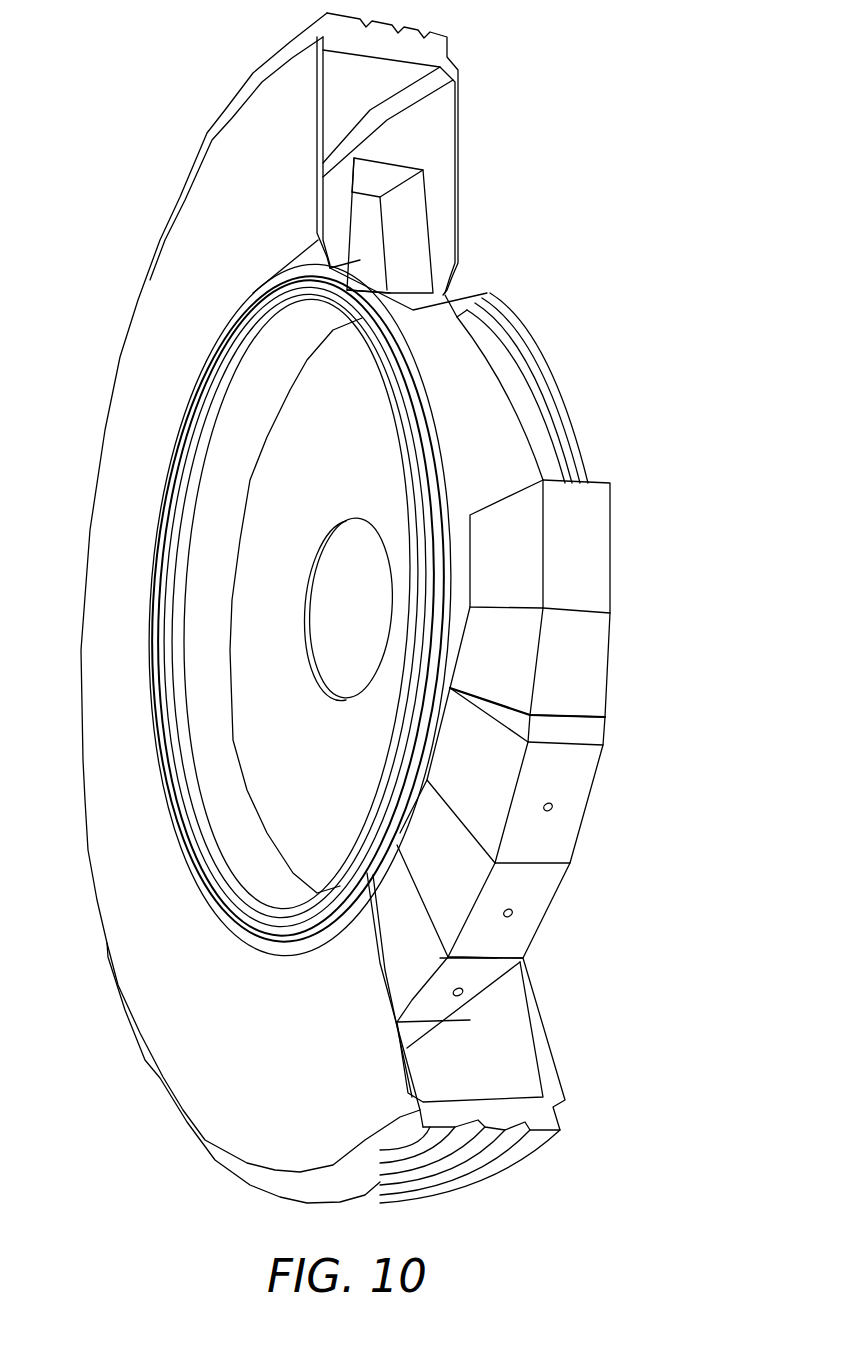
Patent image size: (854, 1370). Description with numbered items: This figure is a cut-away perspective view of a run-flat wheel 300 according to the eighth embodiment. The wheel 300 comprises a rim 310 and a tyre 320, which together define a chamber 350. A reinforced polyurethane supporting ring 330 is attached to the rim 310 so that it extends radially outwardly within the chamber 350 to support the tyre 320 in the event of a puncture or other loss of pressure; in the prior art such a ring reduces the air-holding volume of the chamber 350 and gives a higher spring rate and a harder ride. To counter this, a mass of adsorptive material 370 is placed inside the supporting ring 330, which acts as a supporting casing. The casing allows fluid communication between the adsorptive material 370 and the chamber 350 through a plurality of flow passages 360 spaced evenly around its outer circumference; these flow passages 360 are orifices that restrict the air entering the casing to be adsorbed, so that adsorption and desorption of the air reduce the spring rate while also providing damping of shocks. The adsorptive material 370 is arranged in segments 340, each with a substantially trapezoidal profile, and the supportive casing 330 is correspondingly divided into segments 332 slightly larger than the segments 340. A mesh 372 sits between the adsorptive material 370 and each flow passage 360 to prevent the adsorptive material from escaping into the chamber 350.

The wheel 300 is at (590, 141).
The rim 310 is at (556, 375).
The tyre 320 is at (230, 110).
The supporting ring 330 is at (583, 785).
The segments 332 is at (530, 920).
The segments 340 is at (585, 661).
The chamber 350 is at (440, 120).
The flow passage 360 is at (553, 811).
The adsorptive material 370 is at (583, 545).
The mesh 372 is at (382, 197).